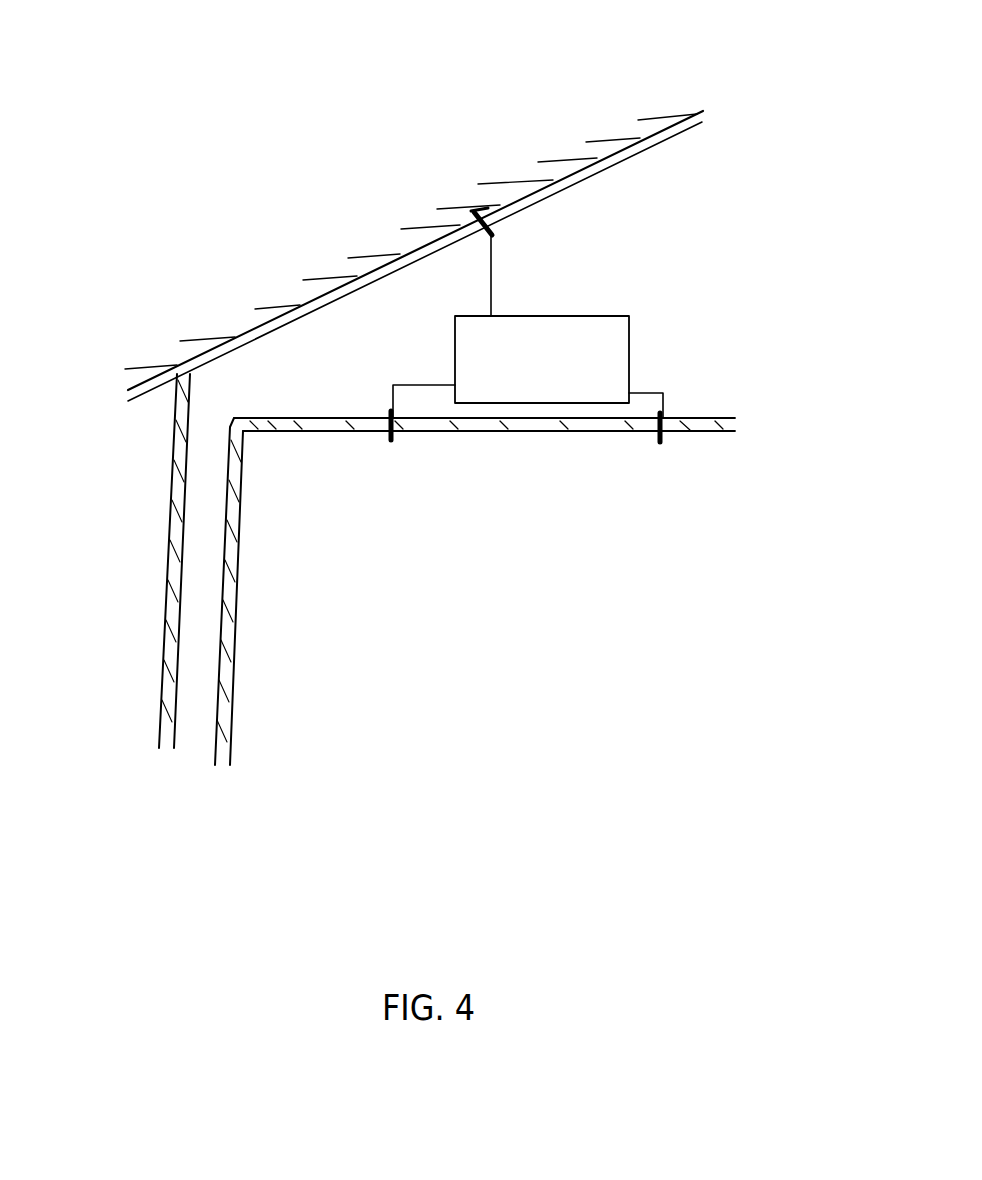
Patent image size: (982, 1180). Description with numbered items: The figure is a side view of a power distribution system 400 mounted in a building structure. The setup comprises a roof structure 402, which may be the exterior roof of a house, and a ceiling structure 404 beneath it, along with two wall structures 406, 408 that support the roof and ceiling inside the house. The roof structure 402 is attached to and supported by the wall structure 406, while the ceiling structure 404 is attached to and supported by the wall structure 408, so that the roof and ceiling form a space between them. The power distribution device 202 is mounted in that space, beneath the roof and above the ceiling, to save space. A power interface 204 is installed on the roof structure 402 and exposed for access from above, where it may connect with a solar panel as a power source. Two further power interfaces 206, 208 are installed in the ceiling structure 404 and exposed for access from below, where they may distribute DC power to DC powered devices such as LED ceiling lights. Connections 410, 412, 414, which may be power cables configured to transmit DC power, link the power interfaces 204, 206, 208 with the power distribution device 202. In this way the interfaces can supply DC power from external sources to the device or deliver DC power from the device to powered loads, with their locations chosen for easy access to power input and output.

The power distribution system 400 is at (245, 66).
The roof structure 402 is at (743, 117).
The ceiling structure 404 is at (552, 397).
The wall structure 406 is at (156, 637).
The wall structure 408 is at (290, 643).
The connection 410 is at (528, 252).
The connection 412 is at (418, 383).
The connection 414 is at (690, 379).
The power distribution device 202 is at (586, 341).
The power interface 204 is at (470, 210).
The power interface 206 is at (409, 457).
The power interface 208 is at (676, 454).